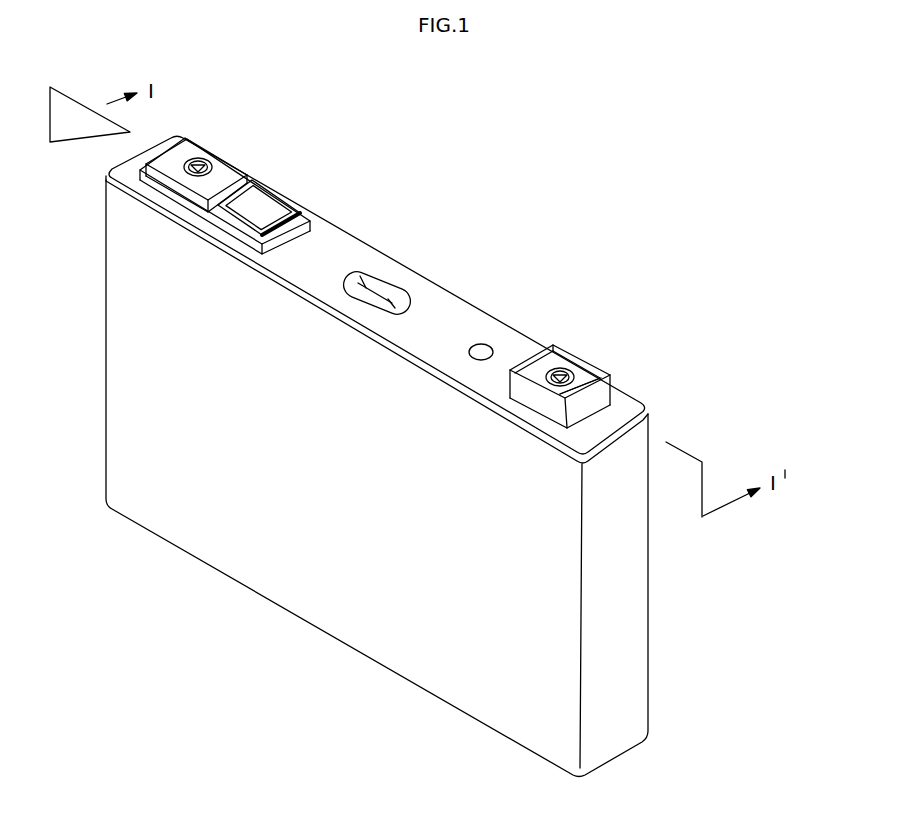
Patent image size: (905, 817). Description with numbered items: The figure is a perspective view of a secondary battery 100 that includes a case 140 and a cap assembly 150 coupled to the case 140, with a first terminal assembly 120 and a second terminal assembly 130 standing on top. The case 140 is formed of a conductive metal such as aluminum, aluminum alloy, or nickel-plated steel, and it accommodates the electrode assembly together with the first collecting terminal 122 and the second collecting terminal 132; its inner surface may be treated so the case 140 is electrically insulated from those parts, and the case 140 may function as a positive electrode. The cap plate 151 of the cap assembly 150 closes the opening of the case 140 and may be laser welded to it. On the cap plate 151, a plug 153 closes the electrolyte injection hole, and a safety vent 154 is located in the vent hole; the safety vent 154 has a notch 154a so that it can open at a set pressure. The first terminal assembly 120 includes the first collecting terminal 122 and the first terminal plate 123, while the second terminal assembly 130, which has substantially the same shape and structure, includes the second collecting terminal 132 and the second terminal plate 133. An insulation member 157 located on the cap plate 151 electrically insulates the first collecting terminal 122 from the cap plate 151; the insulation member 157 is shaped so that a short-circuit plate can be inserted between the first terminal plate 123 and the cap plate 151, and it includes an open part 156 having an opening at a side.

The secondary battery 100 is at (673, 126).
The first terminal assembly 120 is at (246, 167).
The first collecting terminal 122 is at (197, 159).
The first terminal plate 123 is at (220, 165).
The second terminal assembly 130 is at (600, 345).
The second collecting terminal 132 is at (558, 370).
The second terminal plate 133 is at (582, 373).
The case 140 is at (320, 613).
The cap assembly 150 is at (461, 289).
The cap plate 151 is at (323, 238).
The plug 153 is at (482, 345).
The safety vent 154 is at (377, 277).
The notch 154a is at (383, 293).
The open part 156 is at (322, 247).
The insulation member 157 is at (291, 184).